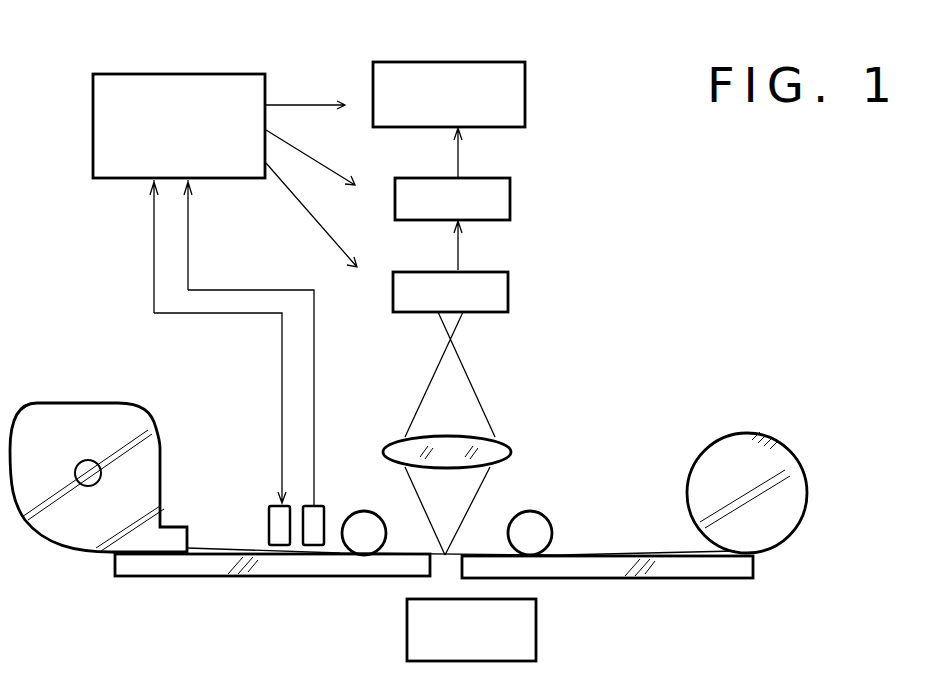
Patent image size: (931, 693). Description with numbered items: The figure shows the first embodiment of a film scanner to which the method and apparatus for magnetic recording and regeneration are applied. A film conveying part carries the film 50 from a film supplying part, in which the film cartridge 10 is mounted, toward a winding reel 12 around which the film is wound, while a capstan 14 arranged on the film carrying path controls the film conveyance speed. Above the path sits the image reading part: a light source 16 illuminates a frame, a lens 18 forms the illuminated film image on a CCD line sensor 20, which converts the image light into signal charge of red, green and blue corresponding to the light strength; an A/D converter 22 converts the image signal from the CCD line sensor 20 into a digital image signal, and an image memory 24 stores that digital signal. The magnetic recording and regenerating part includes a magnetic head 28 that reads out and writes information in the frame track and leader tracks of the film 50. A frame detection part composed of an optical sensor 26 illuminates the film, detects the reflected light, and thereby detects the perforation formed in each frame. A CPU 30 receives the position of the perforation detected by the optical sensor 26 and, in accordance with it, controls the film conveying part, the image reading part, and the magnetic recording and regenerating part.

The film cartridge 10 is at (75, 533).
The winding reel 12 is at (806, 493).
The capstan 14 is at (362, 545).
The light source 16 is at (537, 630).
The lens 18 is at (395, 450).
The CCD line sensor 20 is at (497, 290).
The A/D converter 22 is at (511, 200).
The image memory 24 is at (526, 104).
The optical sensor 26 is at (320, 522).
The magnetic head 28 is at (270, 506).
The CPU 30 is at (232, 80).
The film 50 is at (212, 545).